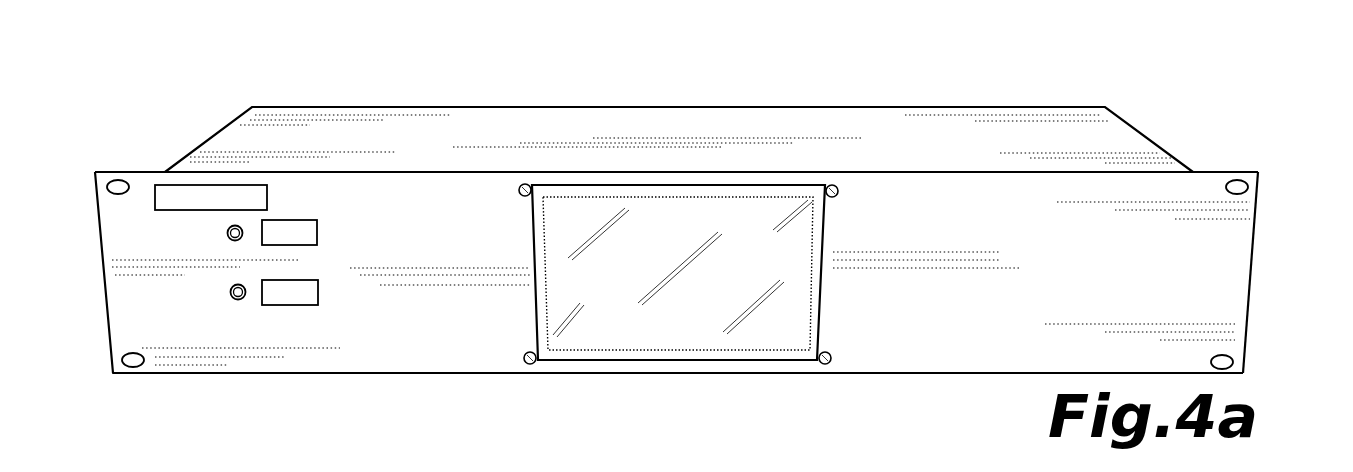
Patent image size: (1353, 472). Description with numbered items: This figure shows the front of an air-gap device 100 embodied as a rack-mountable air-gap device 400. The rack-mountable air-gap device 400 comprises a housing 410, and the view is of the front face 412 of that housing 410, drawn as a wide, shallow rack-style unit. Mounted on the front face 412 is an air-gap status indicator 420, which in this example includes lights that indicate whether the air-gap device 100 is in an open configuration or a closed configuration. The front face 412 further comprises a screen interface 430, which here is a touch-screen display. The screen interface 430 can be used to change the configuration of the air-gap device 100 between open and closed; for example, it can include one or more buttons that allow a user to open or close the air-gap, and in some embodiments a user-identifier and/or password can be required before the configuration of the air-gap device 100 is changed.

The air-gap device 100 is at (722, 190).
The rack-mountable air-gap device 400 is at (722, 190).
The housing 410 is at (212, 132).
The front face 412 is at (1257, 240).
The air-gap status indicator 420 is at (293, 192).
The screen interface 430 is at (849, 213).